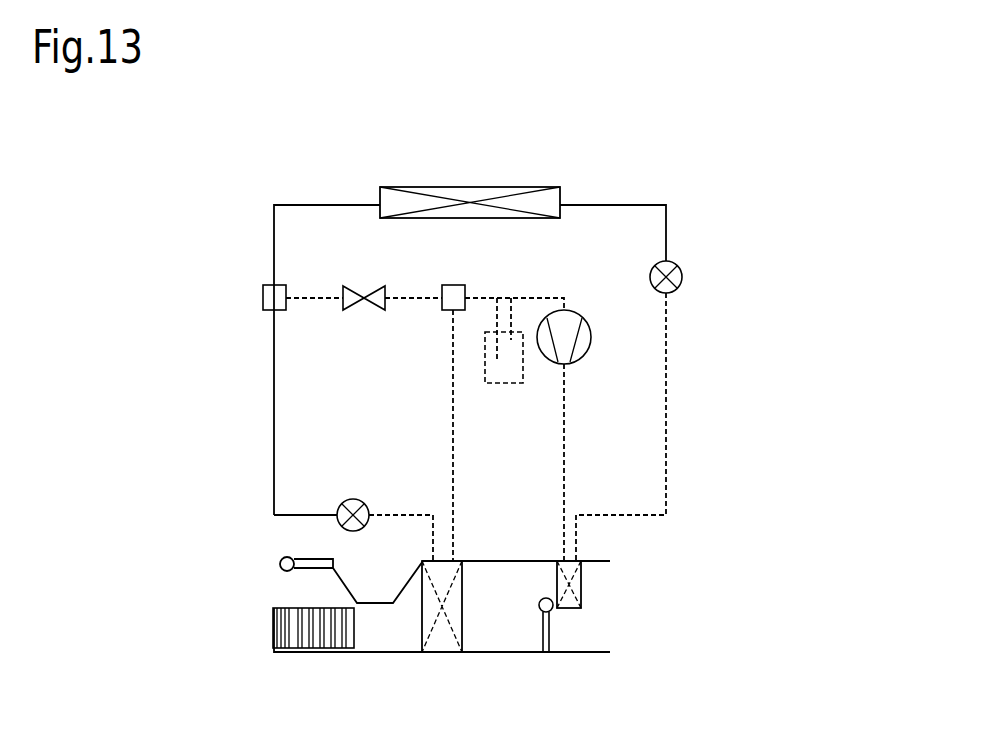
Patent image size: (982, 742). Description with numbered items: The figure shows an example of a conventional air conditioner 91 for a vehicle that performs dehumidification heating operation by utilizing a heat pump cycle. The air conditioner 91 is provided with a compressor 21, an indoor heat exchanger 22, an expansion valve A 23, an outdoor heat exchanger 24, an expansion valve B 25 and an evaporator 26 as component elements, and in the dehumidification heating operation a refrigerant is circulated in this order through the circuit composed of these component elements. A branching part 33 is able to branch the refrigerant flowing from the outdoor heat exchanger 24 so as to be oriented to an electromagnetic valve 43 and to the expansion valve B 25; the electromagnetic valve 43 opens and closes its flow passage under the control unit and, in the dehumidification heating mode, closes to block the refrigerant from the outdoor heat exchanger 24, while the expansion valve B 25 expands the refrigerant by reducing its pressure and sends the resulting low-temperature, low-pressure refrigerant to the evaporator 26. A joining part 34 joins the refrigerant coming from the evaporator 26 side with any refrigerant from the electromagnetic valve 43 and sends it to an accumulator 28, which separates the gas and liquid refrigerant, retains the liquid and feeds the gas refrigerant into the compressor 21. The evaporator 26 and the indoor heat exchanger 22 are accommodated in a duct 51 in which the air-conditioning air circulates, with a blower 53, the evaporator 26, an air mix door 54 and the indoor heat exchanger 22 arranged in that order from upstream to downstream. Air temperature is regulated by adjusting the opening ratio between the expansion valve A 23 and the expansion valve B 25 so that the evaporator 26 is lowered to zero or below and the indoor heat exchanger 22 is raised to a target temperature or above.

The air conditioner 91 is at (143, 165).
The outdoor heat exchanger 24 is at (420, 186).
The branching part 33 is at (263, 297).
The electromagnetic valve 43 is at (352, 287).
The joining part 34 is at (453, 285).
The expansion valve A 23 is at (683, 277).
The accumulator 28 is at (505, 384).
The compressor 21 is at (585, 352).
The expansion valve B 25 is at (353, 499).
The duct 51 is at (280, 563).
The blower 53 is at (313, 650).
The evaporator 26 is at (443, 654).
The indoor heat exchanger 22 is at (583, 585).
The air mix door 54 is at (540, 630).